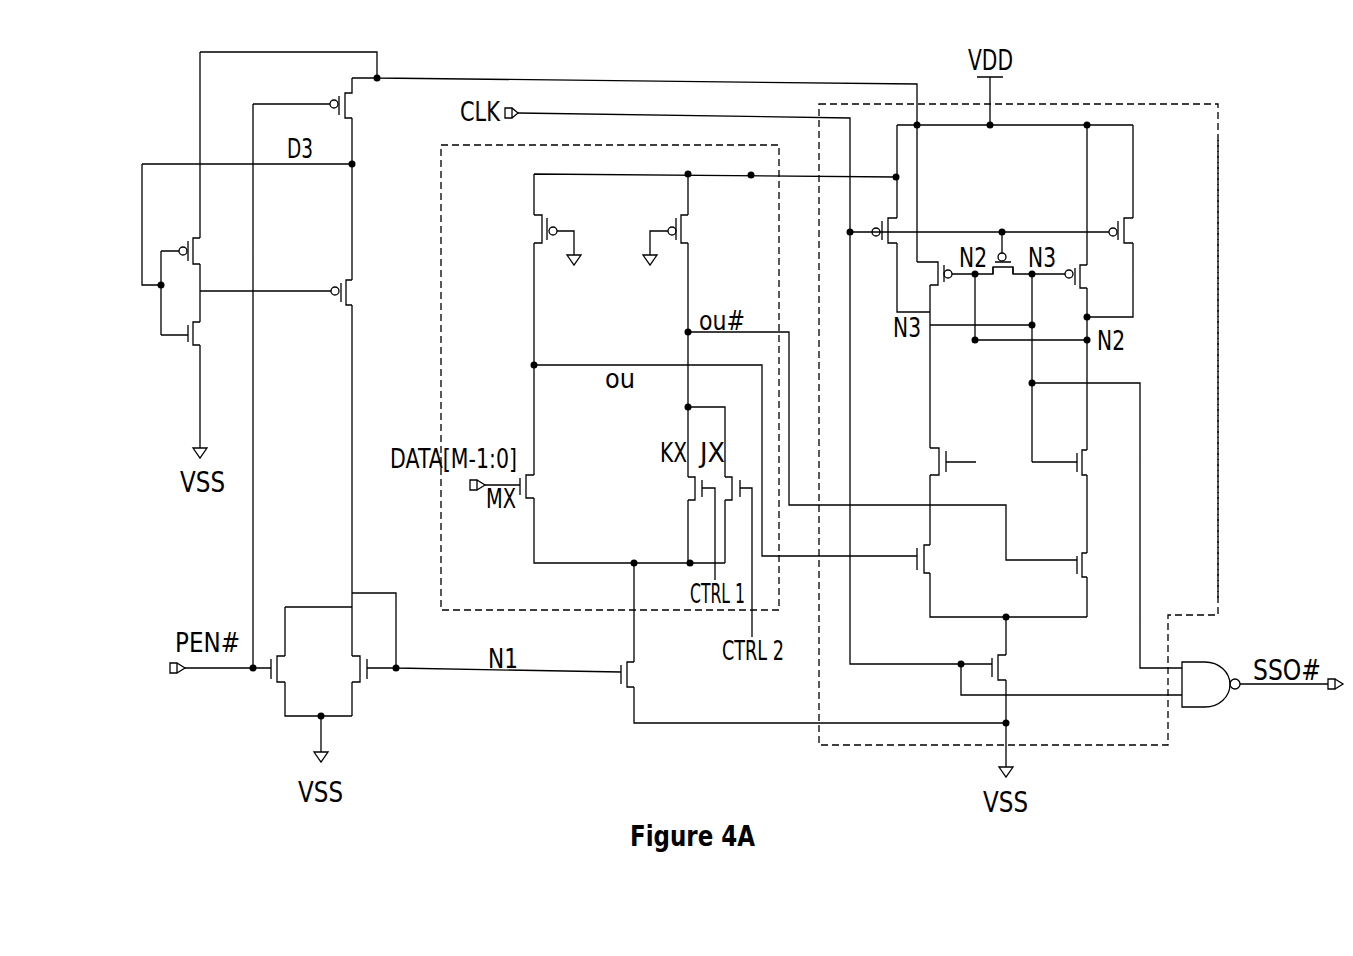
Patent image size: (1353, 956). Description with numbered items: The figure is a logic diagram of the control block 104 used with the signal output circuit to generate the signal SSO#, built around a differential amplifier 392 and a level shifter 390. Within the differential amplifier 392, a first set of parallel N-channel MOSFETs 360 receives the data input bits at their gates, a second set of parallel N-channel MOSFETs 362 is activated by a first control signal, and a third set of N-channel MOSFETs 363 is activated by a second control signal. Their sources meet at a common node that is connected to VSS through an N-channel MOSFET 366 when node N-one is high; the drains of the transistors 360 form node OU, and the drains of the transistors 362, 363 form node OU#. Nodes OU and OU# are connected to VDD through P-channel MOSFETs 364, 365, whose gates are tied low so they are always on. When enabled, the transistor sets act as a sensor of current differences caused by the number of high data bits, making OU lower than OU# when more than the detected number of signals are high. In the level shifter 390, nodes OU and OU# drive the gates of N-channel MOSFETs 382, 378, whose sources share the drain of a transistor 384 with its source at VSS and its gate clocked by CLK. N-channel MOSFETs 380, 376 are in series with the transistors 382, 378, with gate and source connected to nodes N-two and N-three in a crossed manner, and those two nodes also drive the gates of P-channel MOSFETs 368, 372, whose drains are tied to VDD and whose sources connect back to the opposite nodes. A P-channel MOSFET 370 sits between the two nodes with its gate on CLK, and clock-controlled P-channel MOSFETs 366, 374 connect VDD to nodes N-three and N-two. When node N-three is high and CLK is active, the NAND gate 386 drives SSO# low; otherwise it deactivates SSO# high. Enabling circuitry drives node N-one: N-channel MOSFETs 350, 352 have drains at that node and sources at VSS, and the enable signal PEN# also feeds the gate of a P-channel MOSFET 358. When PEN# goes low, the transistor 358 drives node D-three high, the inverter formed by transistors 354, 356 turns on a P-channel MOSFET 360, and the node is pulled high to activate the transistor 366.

The control block 104 is at (867, 44).
The N-channel MOSFET 350 is at (272, 688).
The N-channel MOSFET 352 is at (362, 684).
The P-channel MOSFET of inverter 354 is at (198, 263).
The N-channel MOSFET of inverter 356 is at (197, 328).
The P-channel MOSFET 358 is at (358, 120).
The N-channel MOSFETs / P-channel MOSFET 360 is at (350, 302).
The N-channel MOSFETs 362 is at (693, 478).
The N-channel MOSFETs 363 is at (730, 473).
The P-channel MOSFET 364 is at (683, 240).
The P-channel MOSFET 365 is at (540, 242).
The N-channel MOSFET / P-channel MOSFET 366 is at (635, 686).
The P-channel MOSFET 368 is at (939, 262).
The P-channel MOSFET 370 is at (1013, 267).
The P-channel MOSFET 372 is at (1080, 290).
The P-channel MOSFET 374 is at (1130, 223).
The N-channel MOSFET 376 is at (1082, 482).
The N-channel MOSFET 378 is at (1082, 551).
The N-channel MOSFET 380 is at (933, 472).
The N-channel MOSFET 382 is at (929, 545).
The transistor 384 is at (1006, 672).
The NAND gate 386 is at (1188, 659).
The level shifter 390 is at (1200, 351).
The differential amplifier 392 is at (632, 347).